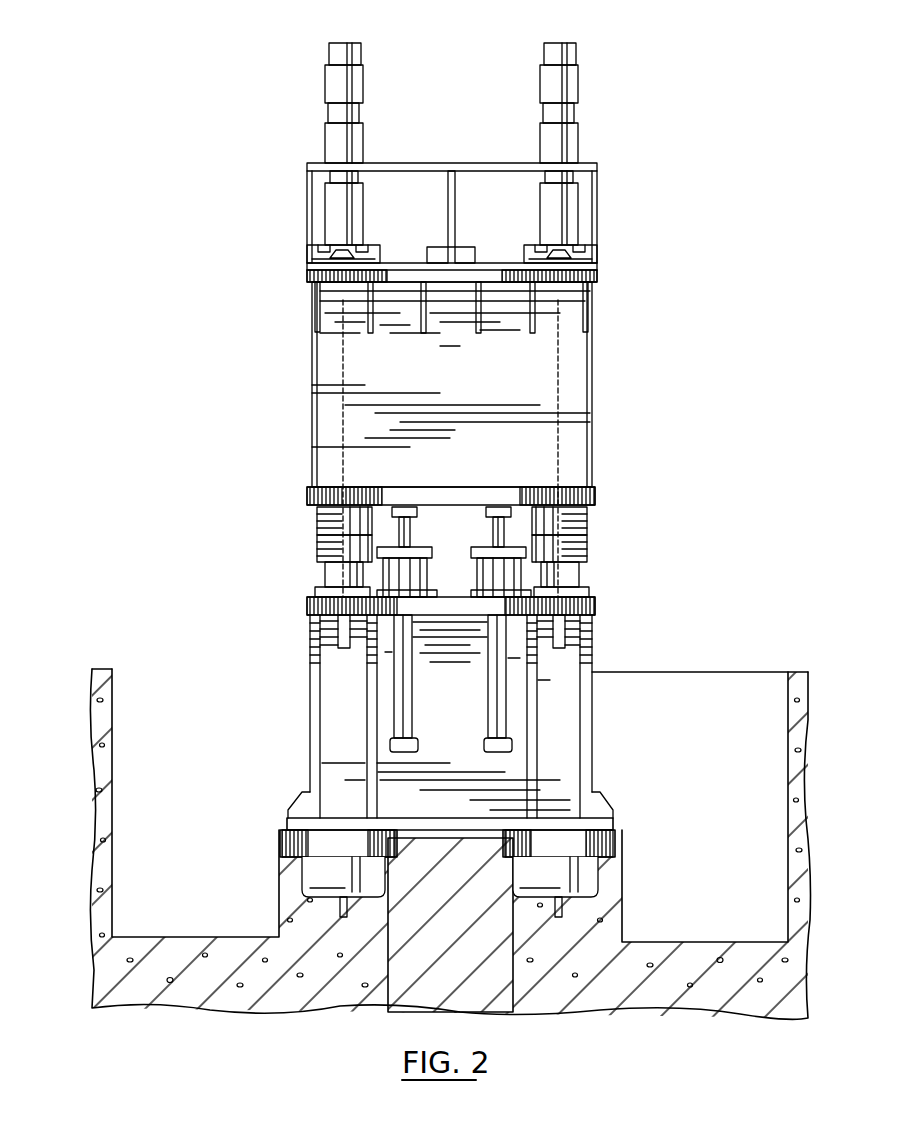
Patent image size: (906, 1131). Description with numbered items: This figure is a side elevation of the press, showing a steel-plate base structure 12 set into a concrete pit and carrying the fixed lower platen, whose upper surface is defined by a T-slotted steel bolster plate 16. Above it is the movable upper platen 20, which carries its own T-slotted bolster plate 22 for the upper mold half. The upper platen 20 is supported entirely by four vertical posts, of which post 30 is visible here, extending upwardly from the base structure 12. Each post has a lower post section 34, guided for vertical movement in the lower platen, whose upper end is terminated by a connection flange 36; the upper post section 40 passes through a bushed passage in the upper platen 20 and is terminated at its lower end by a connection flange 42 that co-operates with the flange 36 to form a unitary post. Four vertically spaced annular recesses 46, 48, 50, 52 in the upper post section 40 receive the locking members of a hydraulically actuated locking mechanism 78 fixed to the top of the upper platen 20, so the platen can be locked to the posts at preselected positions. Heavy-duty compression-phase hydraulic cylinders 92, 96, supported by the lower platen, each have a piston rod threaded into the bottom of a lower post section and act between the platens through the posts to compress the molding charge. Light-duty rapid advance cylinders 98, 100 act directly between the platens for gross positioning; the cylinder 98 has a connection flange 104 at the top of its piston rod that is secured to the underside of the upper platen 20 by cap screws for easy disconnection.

The base structure 12 is at (597, 652).
The T-slotted steel bolster plate 16 is at (598, 607).
The movable upper platen 20 is at (597, 380).
The T-slotted bolster plate 22 is at (598, 501).
The vertical post 30 is at (606, 139).
The lower post section 34 is at (330, 579).
The connection flange 36 is at (321, 553).
The upper post section 40 is at (365, 135).
The connection flange 42 is at (321, 523).
The annular recess 46 is at (329, 52).
The annular recess 48 is at (326, 115).
The annular recess 50 is at (320, 177).
The annular recess 52 is at (322, 238).
The locking mechanism 78 is at (386, 219).
The compression-phase hydraulic cylinder 92 is at (339, 903).
The compression-phase hydraulic cylinder 96 is at (554, 903).
The rapid advance cylinder 98 is at (411, 532).
The rapid advance cylinder 100 is at (492, 526).
The connection flange 104 is at (405, 507).